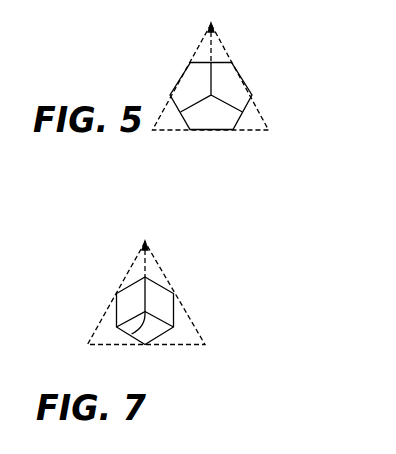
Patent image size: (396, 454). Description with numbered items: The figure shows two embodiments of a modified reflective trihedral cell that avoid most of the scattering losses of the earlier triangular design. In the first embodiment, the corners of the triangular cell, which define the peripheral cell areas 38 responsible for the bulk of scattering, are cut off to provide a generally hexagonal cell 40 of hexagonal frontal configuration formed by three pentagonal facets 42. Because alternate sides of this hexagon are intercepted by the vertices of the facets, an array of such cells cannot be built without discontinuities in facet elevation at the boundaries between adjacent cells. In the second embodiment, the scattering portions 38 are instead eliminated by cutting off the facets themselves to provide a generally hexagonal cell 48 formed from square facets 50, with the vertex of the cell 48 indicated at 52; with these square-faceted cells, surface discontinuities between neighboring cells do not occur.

In FIG. 5, the peripheral cell areas 38 is at (218, 44).
In FIG. 5, the generally hexagonal cell 40 is at (236, 68).
In FIG. 5, the pentagonal facets 42 is at (183, 83).
In FIG. 7, the generally hexagonal cell 48 is at (163, 280).
In FIG. 7, the square facets 50 is at (132, 292).
In FIG. 7, the vertex of cell 52 is at (129, 331).